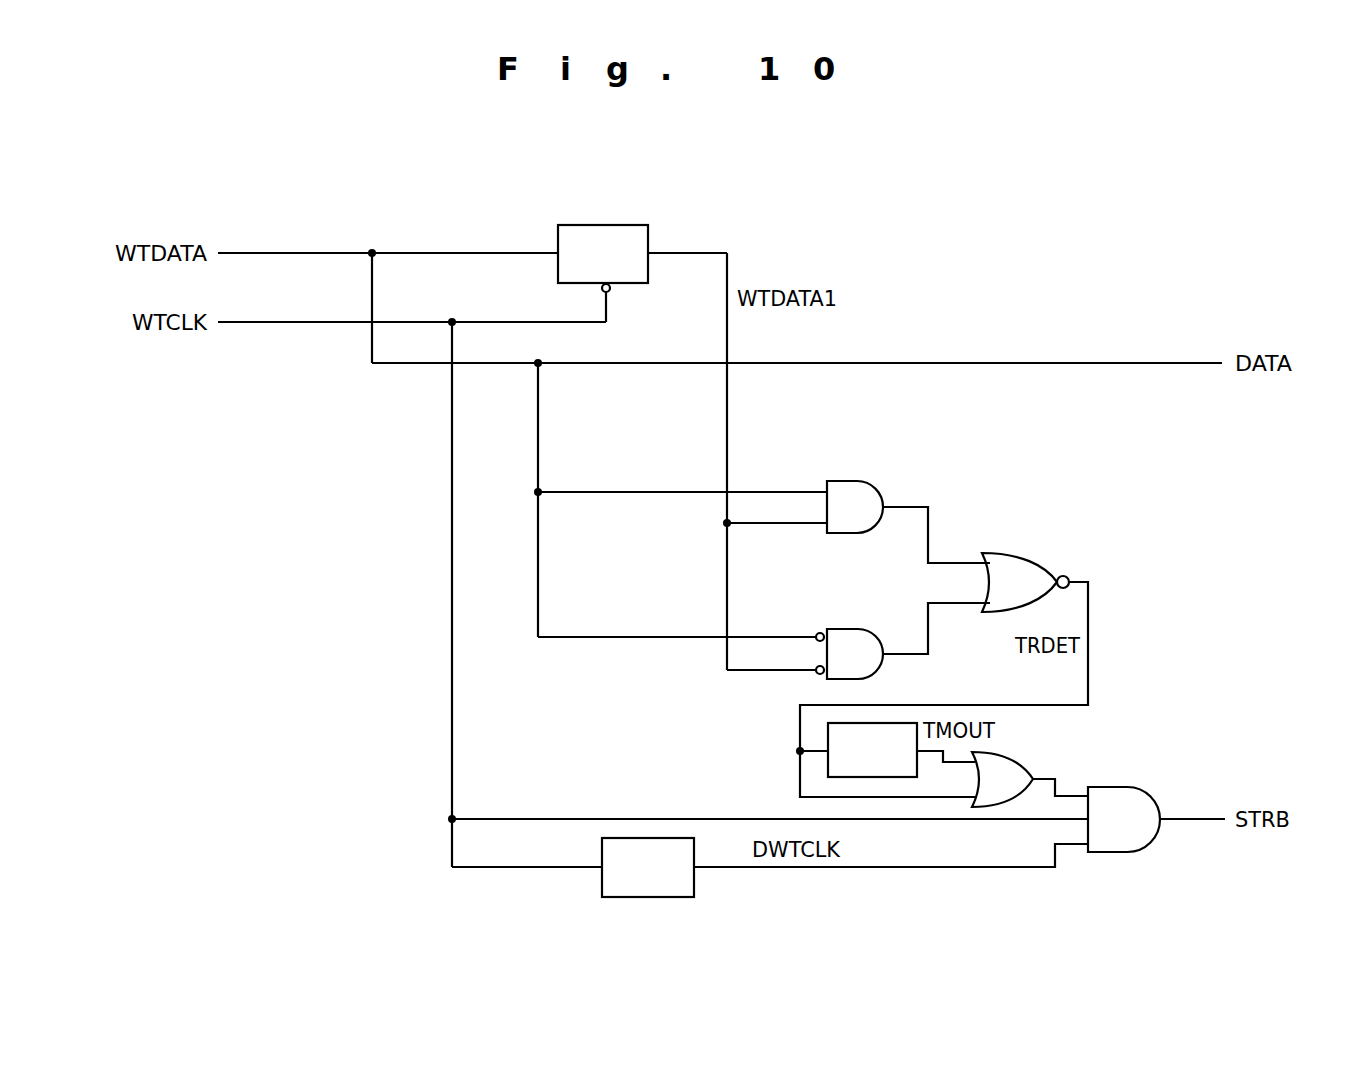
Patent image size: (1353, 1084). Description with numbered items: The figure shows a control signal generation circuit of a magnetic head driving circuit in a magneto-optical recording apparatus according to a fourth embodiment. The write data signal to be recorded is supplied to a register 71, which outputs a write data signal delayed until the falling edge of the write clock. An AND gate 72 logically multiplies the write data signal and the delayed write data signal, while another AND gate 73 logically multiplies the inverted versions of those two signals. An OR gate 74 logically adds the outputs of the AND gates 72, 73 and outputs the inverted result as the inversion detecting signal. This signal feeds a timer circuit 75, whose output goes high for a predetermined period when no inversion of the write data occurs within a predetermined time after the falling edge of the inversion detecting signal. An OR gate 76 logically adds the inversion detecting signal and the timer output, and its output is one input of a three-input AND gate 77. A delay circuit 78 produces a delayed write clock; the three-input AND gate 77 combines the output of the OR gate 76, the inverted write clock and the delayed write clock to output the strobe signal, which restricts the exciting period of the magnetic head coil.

The register 71 is at (616, 225).
The AND gate 72 is at (850, 481).
The AND gate 73 is at (838, 629).
The OR gate 74 is at (1020, 553).
The timer circuit 75 is at (825, 740).
The OR gate 76 is at (1025, 767).
The three-input AND gate 77 is at (1120, 787).
The delay circuit 78 is at (633, 838).